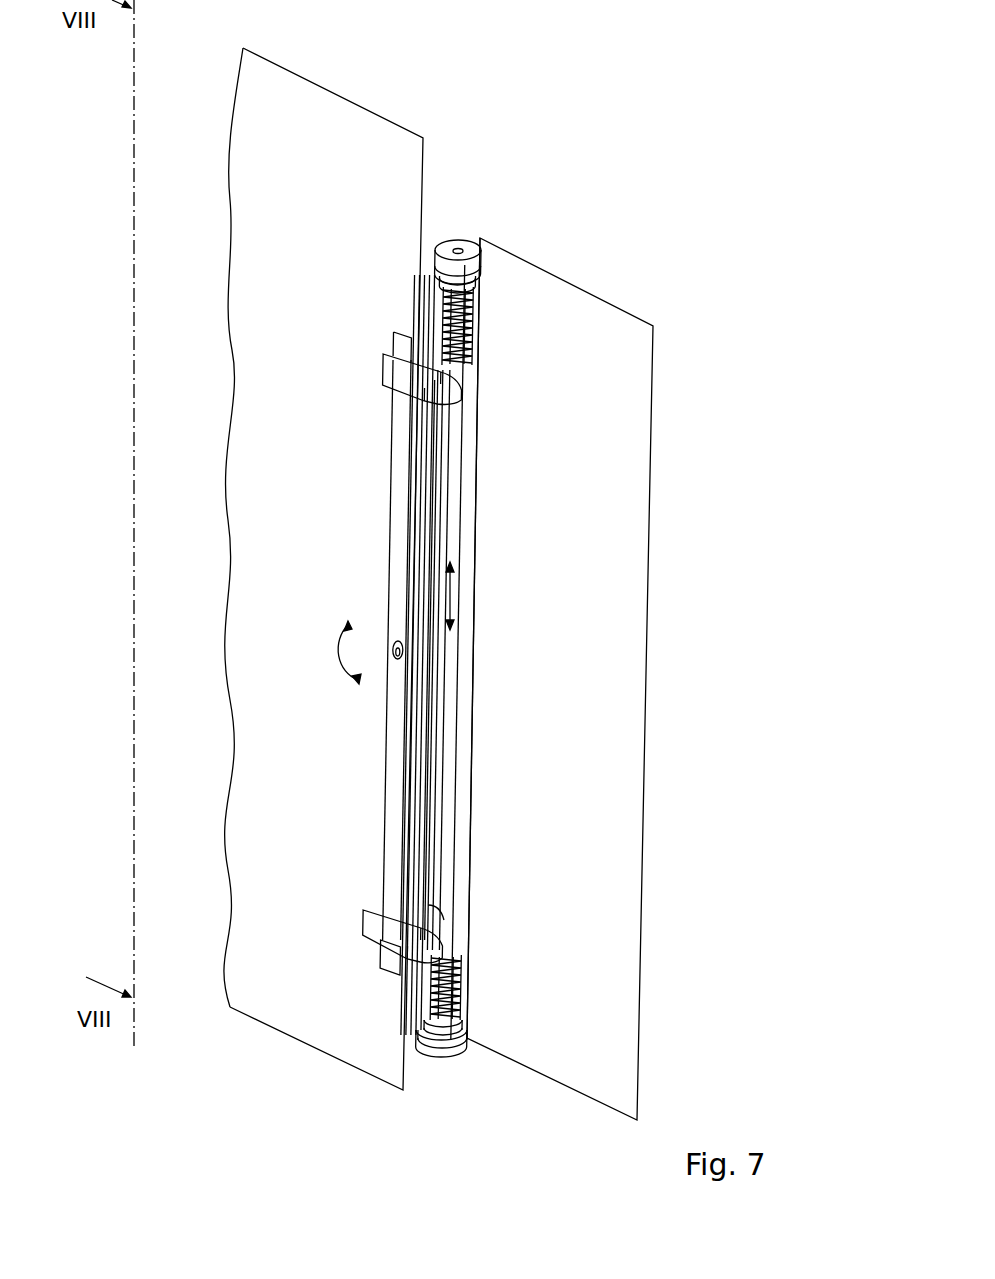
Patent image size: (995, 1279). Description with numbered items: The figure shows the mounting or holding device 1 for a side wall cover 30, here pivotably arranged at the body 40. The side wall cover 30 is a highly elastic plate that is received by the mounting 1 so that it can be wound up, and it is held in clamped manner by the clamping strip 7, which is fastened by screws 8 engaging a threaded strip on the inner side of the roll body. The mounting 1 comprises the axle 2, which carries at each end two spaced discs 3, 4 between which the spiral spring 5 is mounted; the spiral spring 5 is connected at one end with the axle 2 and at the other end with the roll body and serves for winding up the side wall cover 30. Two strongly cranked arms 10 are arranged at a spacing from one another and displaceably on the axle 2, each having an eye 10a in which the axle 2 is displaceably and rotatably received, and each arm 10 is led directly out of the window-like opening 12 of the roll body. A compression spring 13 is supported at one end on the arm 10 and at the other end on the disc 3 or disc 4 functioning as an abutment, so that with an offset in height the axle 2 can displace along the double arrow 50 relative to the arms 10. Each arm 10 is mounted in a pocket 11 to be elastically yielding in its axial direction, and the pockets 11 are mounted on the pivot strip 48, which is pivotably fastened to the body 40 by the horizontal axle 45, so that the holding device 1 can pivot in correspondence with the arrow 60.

The mounting 1 is at (481, 236).
The axle 2 is at (452, 718).
The disc 3 is at (447, 243).
The disc 4 is at (450, 283).
The spiral spring 5 is at (442, 268).
The clamping strip 7 is at (425, 497).
The screws 8 is at (430, 592).
The arm 10 is at (453, 393).
The eye 10a is at (445, 912).
The pocket 11 is at (395, 362).
The window-like opening 12 is at (485, 533).
The compression spring 13 is at (467, 325).
The side wall cover 30 is at (590, 318).
The body 40 is at (362, 123).
The horizontal axle 45 is at (398, 663).
The pivot strip 48 is at (393, 727).
The double arrow 50 is at (452, 597).
The arrow 60 is at (334, 652).